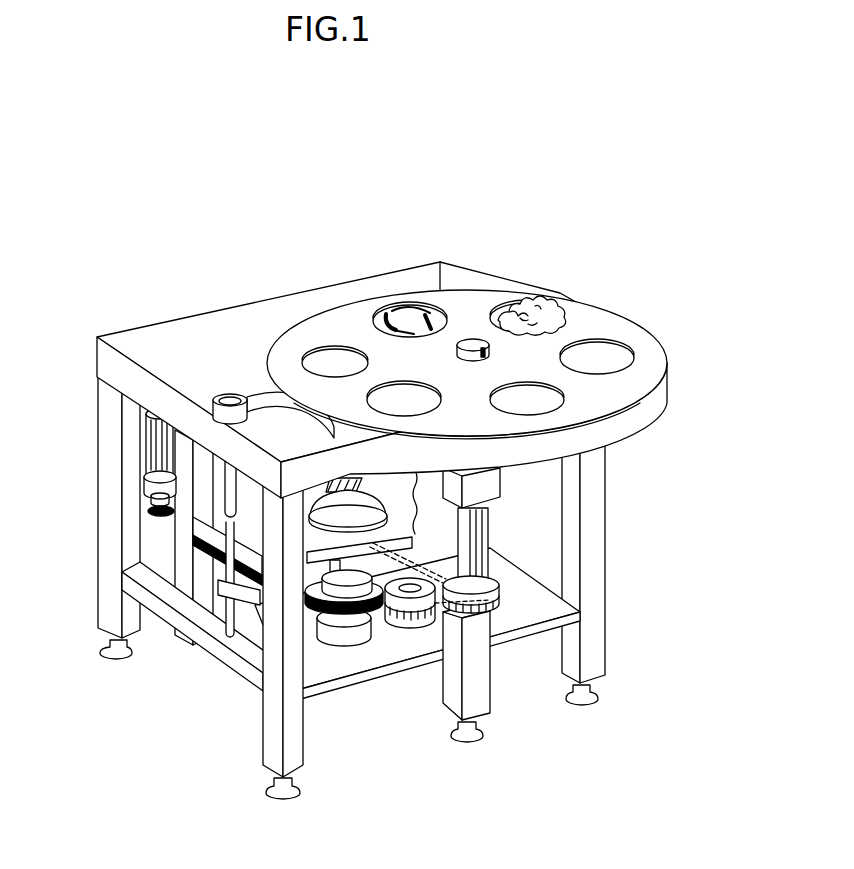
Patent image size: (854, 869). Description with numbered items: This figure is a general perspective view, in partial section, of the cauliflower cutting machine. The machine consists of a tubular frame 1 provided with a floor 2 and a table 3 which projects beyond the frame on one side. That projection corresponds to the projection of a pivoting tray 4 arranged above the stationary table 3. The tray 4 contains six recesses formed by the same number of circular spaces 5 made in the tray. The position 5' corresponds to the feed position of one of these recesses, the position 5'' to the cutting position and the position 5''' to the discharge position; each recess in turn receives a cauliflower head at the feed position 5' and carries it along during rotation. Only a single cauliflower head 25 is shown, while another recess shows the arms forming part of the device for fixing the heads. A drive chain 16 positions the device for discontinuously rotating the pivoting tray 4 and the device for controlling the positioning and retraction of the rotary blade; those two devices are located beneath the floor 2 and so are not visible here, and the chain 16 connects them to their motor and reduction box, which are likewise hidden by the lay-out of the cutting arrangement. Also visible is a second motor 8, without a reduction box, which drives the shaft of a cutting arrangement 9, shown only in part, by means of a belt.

The tubular frame 1 is at (107, 413).
The floor 2 is at (243, 650).
The table 3 is at (230, 362).
The pivoting tray 4 is at (648, 360).
The circular spaces 5 is at (426, 264).
The feed position 5' is at (620, 424).
The cutting position 5'' is at (311, 286).
The discharge position 5''' is at (372, 305).
The second motor 8 is at (160, 458).
The cutting arrangement 9 is at (352, 488).
The drive chain 16 is at (403, 574).
The cauliflower head 25 is at (547, 298).